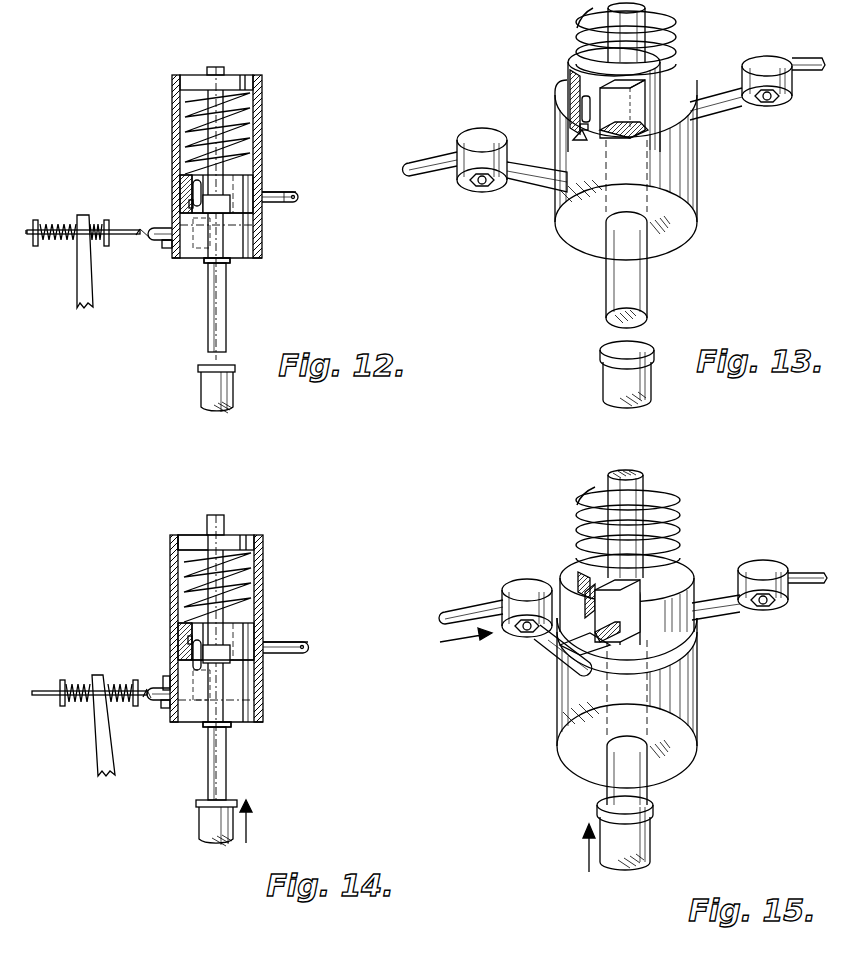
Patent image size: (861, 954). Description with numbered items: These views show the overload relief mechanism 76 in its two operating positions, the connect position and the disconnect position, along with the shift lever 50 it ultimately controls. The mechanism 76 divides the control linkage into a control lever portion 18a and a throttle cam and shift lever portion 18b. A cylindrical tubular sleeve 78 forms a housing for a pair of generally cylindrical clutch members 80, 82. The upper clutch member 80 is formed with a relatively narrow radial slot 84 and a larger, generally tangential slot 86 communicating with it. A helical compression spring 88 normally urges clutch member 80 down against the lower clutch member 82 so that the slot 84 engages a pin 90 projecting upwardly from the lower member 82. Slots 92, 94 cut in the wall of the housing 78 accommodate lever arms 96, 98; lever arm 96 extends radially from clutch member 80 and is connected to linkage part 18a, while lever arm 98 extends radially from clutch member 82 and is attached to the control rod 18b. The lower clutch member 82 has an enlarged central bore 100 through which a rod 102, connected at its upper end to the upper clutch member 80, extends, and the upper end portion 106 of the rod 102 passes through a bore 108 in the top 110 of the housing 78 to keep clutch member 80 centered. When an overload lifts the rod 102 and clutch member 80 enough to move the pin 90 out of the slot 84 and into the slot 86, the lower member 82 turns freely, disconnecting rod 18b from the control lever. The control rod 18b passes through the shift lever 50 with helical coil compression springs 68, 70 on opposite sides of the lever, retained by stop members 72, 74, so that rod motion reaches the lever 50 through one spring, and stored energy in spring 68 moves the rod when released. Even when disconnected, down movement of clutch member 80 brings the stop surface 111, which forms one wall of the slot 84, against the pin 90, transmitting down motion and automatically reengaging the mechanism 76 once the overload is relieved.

In FIG. 13, the control lever portion 18a is at (796, 60).
In FIG. 15, the control lever portion 18a is at (797, 572).
In FIG. 12, the throttle cam and shift lever portion 18b is at (138, 228).
In FIG. 13, the throttle cam and shift lever portion 18b is at (432, 160).
In FIG. 14, the throttle cam and shift lever portion 18b is at (150, 689).
In FIG. 15, the throttle cam and shift lever portion 18b is at (465, 614).
In FIG. 12, the shift lever 50 is at (82, 300).
In FIG. 14, the shift lever 50 is at (100, 755).
In FIG. 12, the helical coil compression spring 68 is at (94, 230).
In FIG. 14, the helical coil compression spring 68 is at (96, 683).
In FIG. 12, the helical coil compression spring 70 is at (70, 240).
In FIG. 14, the helical coil compression spring 70 is at (71, 703).
In FIG. 12, the stop member 72 is at (108, 246).
In FIG. 14, the stop member 72 is at (138, 706).
In FIG. 12, the stop member 74 is at (36, 221).
In FIG. 14, the stop member 74 is at (60, 681).
In FIG. 12, the overload relief mechanism 76 is at (283, 258).
In FIG. 13, the overload relief mechanism 76 is at (700, 210).
In FIG. 14, the overload relief mechanism 76 is at (270, 688).
In FIG. 15, the overload relief mechanism 76 is at (712, 699).
In FIG. 12, the cylindrical tubular sleeve 78 is at (262, 113).
In FIG. 14, the cylindrical tubular sleeve 78 is at (266, 591).
In FIG. 12, the upper clutch member 80 is at (216, 216).
In FIG. 13, the upper clutch member 80 is at (560, 97).
In FIG. 14, the upper clutch member 80 is at (254, 636).
In FIG. 15, the upper clutch member 80 is at (666, 578).
In FIG. 12, the lower clutch member 82 is at (259, 248).
In FIG. 13, the lower clutch member 82 is at (692, 182).
In FIG. 14, the lower clutch member 82 is at (238, 700).
In FIG. 15, the lower clutch member 82 is at (698, 717).
In FIG. 12, the radial slot 84 is at (183, 180).
In FIG. 13, the radial slot 84 is at (578, 74).
In FIG. 14, the radial slot 84 is at (183, 633).
In FIG. 15, the radial slot 84 is at (581, 574).
In FIG. 12, the tangential slot 86 is at (215, 203).
In FIG. 13, the tangential slot 86 is at (640, 92).
In FIG. 14, the tangential slot 86 is at (213, 657).
In FIG. 15, the tangential slot 86 is at (598, 662).
In FIG. 12, the helical compression spring 88 is at (192, 117).
In FIG. 13, the helical compression spring 88 is at (664, 28).
In FIG. 14, the helical compression spring 88 is at (242, 571).
In FIG. 15, the helical compression spring 88 is at (671, 517).
In FIG. 12, the pin 90 is at (192, 190).
In FIG. 13, the pin 90 is at (580, 108).
In FIG. 14, the pin 90 is at (196, 654).
In FIG. 15, the pin 90 is at (655, 593).
In FIG. 12, the slot 92 is at (268, 192).
In FIG. 14, the slot 92 is at (283, 653).
In FIG. 12, the slot 94 is at (175, 252).
In FIG. 14, the slot 94 is at (170, 688).
In FIG. 12, the lever arm 96 is at (293, 203).
In FIG. 13, the lever arm 96 is at (730, 108).
In FIG. 14, the lever arm 96 is at (294, 650).
In FIG. 15, the lever arm 96 is at (720, 612).
In FIG. 12, the lever arm 98 is at (167, 242).
In FIG. 13, the lever arm 98 is at (516, 188).
In FIG. 14, the lever arm 98 is at (161, 705).
In FIG. 15, the lever arm 98 is at (545, 646).
In FIG. 12, the central bore 100 is at (204, 267).
In FIG. 13, the central bore 100 is at (613, 242).
In FIG. 14, the central bore 100 is at (204, 740).
In FIG. 15, the central bore 100 is at (612, 752).
In FIG. 12, the rod 102 is at (234, 393).
In FIG. 13, the rod 102 is at (620, 378).
In FIG. 14, the rod 102 is at (204, 818).
In FIG. 15, the rod 102 is at (657, 845).
In FIG. 12, the upper end portion 106 is at (228, 141).
In FIG. 13, the upper end portion 106 is at (587, 21).
In FIG. 14, the upper end portion 106 is at (222, 525).
In FIG. 15, the upper end portion 106 is at (647, 490).
In FIG. 12, the bore 108 is at (207, 81).
In FIG. 14, the bore 108 is at (206, 544).
In FIG. 12, the top 110 is at (236, 75).
In FIG. 14, the top 110 is at (248, 537).
In FIG. 12, the stop surface 111 is at (188, 202).
In FIG. 13, the stop surface 111 is at (578, 125).
In FIG. 14, the stop surface 111 is at (188, 643).
In FIG. 15, the stop surface 111 is at (590, 603).